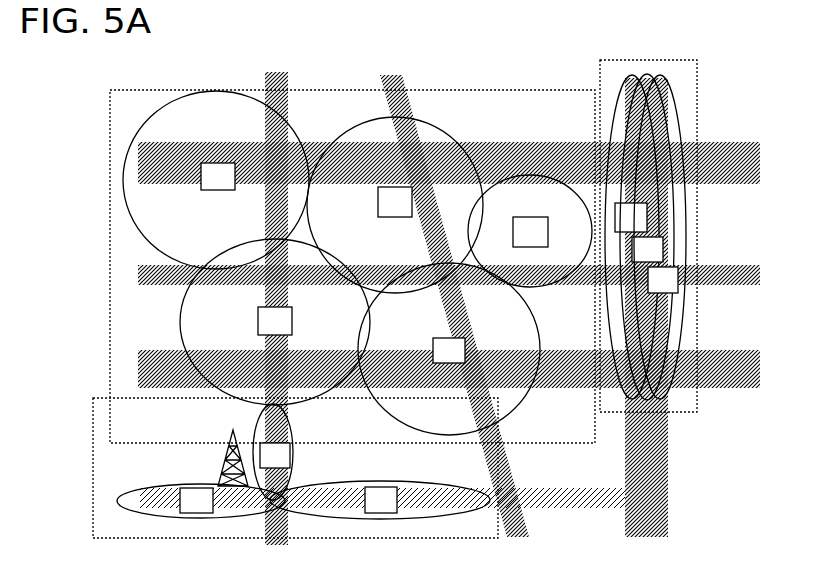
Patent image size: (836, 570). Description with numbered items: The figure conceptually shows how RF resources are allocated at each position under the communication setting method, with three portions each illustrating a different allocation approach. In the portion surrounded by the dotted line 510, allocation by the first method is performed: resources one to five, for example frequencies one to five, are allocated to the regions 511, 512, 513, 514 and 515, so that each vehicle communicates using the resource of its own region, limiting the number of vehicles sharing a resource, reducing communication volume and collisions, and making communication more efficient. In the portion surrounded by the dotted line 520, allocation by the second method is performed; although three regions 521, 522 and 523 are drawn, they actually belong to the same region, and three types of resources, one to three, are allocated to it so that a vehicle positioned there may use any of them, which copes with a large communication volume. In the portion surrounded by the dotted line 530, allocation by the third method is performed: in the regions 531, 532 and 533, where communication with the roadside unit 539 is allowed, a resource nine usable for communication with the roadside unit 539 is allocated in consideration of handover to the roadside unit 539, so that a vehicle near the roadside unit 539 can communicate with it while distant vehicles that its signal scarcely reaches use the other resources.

The dotted line 510 is at (432, 90).
The region 511 is at (124, 178).
The region 512 is at (181, 322).
The region 513 is at (355, 134).
The region 514 is at (576, 324).
The region 515 is at (518, 172).
The dotted line 520 is at (698, 106).
The region 521 is at (628, 76).
The region 522 is at (646, 76).
The region 523 is at (664, 78).
The dotted line 530 is at (93, 482).
The region 531 is at (153, 484).
The region 532 is at (294, 474).
The region 533 is at (394, 482).
The roadside unit 539 is at (223, 473).